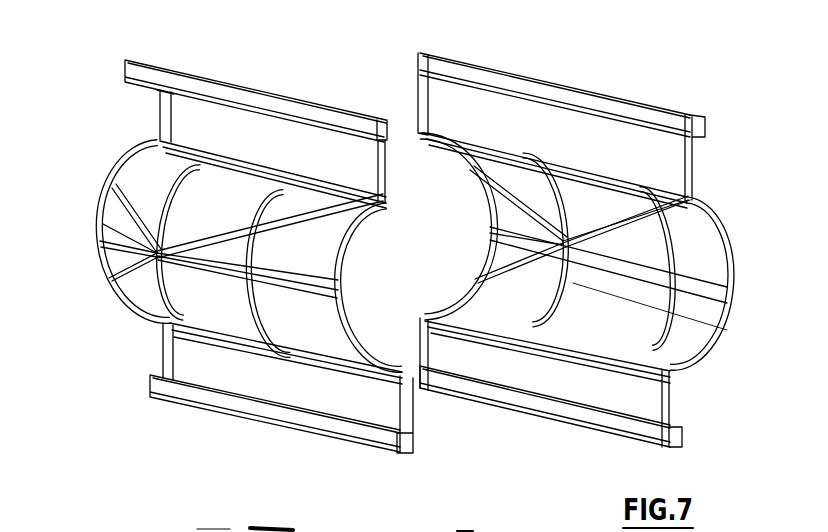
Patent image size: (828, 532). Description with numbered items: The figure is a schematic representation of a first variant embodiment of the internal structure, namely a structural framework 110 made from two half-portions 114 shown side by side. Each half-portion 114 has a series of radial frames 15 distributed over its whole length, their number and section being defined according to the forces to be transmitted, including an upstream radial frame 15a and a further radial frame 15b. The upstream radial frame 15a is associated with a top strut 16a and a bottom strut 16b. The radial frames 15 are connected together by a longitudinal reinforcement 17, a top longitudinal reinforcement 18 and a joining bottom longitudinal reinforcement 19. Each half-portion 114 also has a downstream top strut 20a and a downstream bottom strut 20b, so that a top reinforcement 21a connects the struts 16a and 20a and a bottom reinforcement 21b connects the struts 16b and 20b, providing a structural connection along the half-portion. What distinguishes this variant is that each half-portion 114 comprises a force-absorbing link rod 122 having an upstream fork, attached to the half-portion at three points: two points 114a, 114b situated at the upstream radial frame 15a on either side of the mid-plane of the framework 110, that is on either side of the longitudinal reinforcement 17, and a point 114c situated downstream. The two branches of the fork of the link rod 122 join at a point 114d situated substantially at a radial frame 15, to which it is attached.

The structural framework 110 is at (619, 73).
The half-portion 114 is at (306, 293).
The downstream attachment point 114a is at (113, 181).
The downstream attachment point 114b is at (112, 280).
The downstream attachment point 114c is at (347, 190).
The fork joining point 114d is at (153, 273).
The force-absorbing link rod 122 is at (130, 160).
The radial frame 15 is at (728, 313).
The upstream radial frame 15a is at (100, 215).
The radial frame 15b is at (367, 271).
The top strut 16a is at (158, 102).
The bottom strut 16b is at (412, 350).
The longitudinal reinforcement 17 is at (100, 262).
The top longitudinal reinforcement 18 is at (199, 160).
The bottom longitudinal reinforcement 19 is at (320, 380).
The downstream top strut 20a is at (386, 156).
The downstream bottom strut 20b is at (414, 404).
The top reinforcement 21a is at (216, 95).
The bottom reinforcement 21b is at (363, 440).